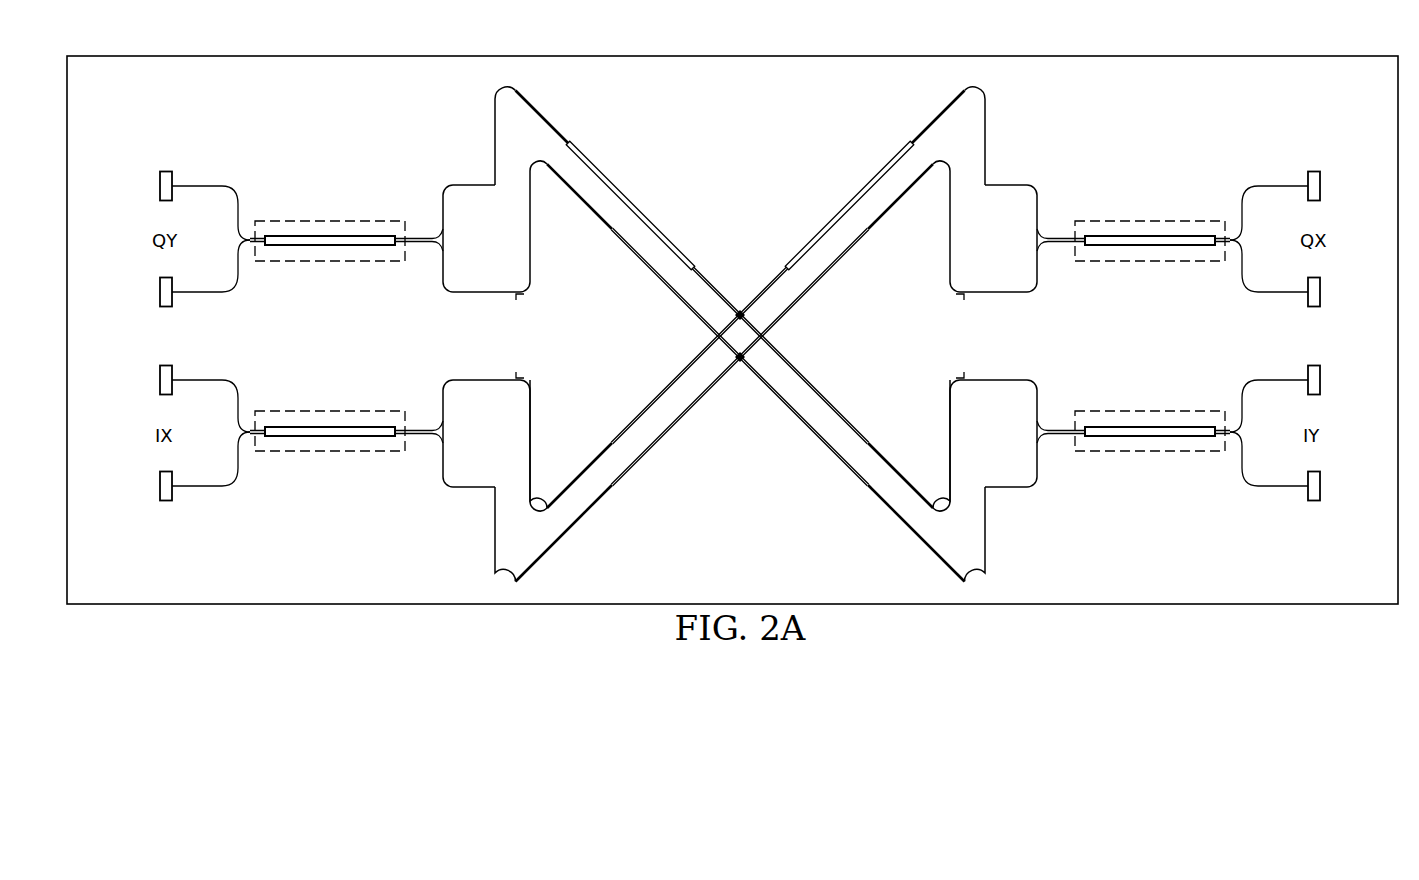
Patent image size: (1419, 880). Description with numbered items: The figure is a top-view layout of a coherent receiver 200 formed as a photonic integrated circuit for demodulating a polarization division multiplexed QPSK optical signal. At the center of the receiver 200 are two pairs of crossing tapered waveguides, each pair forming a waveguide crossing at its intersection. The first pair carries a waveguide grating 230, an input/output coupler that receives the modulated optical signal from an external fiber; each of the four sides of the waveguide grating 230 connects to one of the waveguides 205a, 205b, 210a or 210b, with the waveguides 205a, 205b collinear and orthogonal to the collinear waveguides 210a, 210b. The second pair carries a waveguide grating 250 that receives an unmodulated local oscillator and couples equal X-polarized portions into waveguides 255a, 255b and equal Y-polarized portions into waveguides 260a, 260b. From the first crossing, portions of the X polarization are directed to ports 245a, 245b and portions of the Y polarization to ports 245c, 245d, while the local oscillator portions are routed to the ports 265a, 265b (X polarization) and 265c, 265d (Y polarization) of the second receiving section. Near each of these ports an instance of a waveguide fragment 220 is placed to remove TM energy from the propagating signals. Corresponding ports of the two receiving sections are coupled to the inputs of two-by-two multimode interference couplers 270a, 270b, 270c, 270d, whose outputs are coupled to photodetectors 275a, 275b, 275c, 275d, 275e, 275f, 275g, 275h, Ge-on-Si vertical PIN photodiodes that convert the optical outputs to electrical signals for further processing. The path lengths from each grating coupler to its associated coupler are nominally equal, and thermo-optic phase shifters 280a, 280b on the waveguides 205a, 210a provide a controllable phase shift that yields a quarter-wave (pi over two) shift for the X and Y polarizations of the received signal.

The coherent receiver 200 is at (526, 54).
The waveguide 205a is at (567, 98).
The waveguide 205b is at (868, 398).
The waveguide 210a is at (933, 113).
The waveguide 210b is at (635, 416).
The waveguide fragment 220 is at (490, 193).
The waveguide grating 230 is at (740, 305).
The port 245a is at (1008, 185).
The port 245b is at (492, 381).
The port 245c is at (472, 185).
The port 245d is at (988, 381).
The waveguide grating 250 is at (741, 365).
The waveguide 255a is at (845, 254).
The waveguide 255b is at (633, 472).
The waveguide 260a is at (635, 254).
The waveguide 260b is at (847, 472).
The port 265a is at (988, 294).
The port 265b is at (472, 488).
The port 265c is at (492, 294).
The port 265d is at (1008, 488).
The 2×2 optical coupler 270a is at (317, 220).
The 2×2 optical coupler 270b is at (317, 452).
The 2×2 optical coupler 270c is at (1163, 220).
The 2×2 optical coupler 270d is at (1163, 452).
The photodetector 275a is at (167, 170).
The photodetector 275b is at (160, 289).
The photodetector 275c is at (160, 382).
The photodetector 275d is at (167, 503).
The photodetector 275e is at (1313, 170).
The photodetector 275f is at (1320, 289).
The photodetector 275g is at (1320, 382).
The photodetector 275h is at (1313, 503).
The thermo-optic phase shifter 280a is at (655, 184).
The thermo-optic phase shifter 280b is at (845, 198).